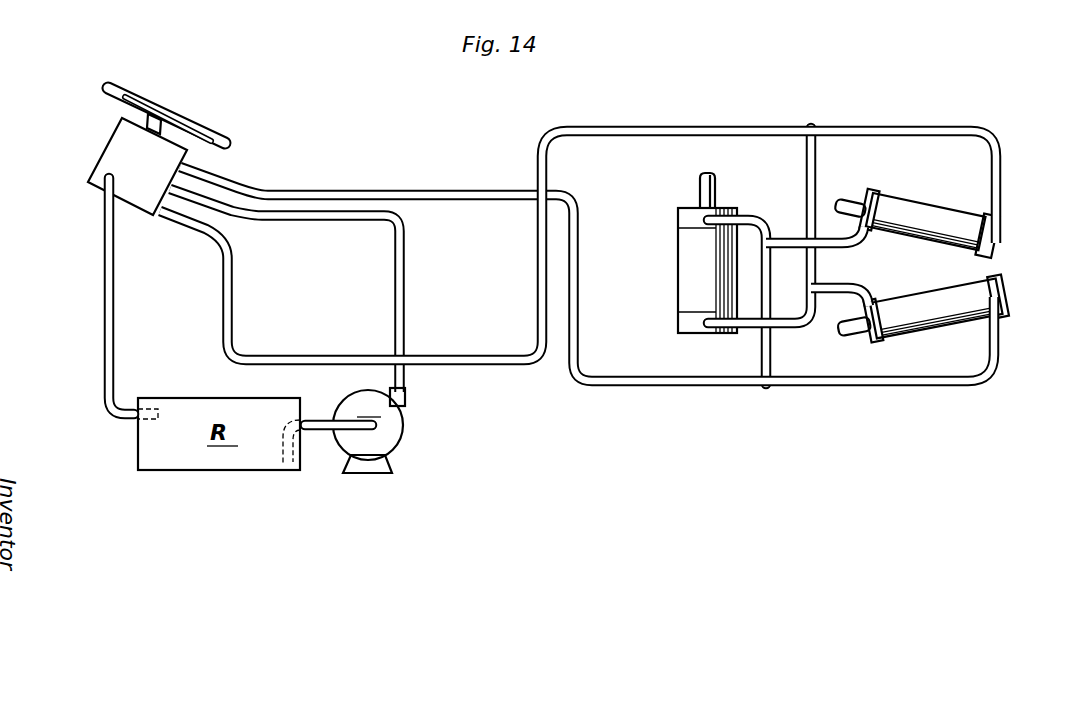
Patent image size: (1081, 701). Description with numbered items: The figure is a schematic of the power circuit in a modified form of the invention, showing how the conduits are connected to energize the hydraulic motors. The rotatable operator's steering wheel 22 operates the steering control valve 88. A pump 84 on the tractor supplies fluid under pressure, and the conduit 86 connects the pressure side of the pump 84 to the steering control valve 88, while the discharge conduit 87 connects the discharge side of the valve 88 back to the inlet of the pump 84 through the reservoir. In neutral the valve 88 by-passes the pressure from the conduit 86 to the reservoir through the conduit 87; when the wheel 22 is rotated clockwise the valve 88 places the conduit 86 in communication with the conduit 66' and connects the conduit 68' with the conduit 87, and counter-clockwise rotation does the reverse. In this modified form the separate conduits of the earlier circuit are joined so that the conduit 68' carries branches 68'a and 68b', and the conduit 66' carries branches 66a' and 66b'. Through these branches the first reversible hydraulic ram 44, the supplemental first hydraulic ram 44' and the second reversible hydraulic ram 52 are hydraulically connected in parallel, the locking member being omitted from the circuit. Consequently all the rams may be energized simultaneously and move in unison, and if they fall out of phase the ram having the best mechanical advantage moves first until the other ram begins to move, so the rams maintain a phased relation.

The steering wheel 22 is at (186, 122).
The steering control valve 88 is at (125, 141).
The conduit 68' is at (587, 279).
The conduit 66' is at (612, 219).
The conduit 86 is at (400, 298).
The discharge conduit 87 is at (113, 309).
The pump 84 is at (392, 425).
The second reversible hydraulic ram 52 is at (700, 252).
The branch 68'a is at (746, 277).
The branch 66a' is at (807, 246).
The branch 68b' is at (821, 254).
The branch 66b' is at (878, 276).
The supplemental first hydraulic ram 44' is at (916, 213).
The first reversible hydraulic ram 44 is at (921, 320).